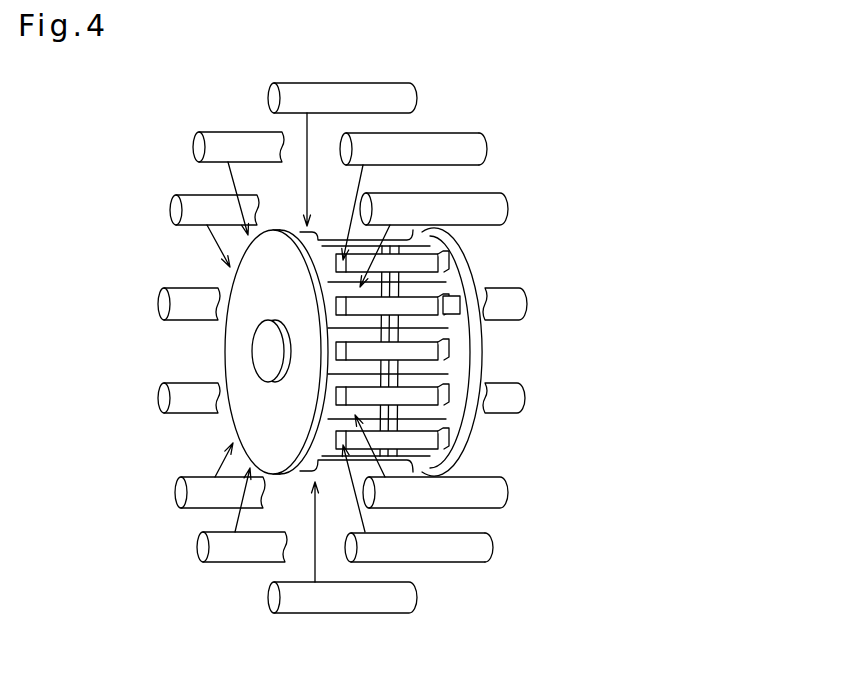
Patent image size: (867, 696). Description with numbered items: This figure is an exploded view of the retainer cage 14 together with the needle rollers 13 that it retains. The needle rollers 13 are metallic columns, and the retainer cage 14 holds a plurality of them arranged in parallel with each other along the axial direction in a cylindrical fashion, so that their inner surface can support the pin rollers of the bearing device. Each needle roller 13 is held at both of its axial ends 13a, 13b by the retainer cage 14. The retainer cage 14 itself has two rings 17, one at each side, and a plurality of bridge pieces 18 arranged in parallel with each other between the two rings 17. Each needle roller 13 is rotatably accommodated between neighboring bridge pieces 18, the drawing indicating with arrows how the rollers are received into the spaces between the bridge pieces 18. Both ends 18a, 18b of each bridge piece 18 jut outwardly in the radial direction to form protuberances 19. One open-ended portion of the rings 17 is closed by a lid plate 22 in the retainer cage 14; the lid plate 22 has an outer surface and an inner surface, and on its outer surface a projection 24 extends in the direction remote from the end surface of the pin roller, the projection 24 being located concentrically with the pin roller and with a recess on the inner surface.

The needle roller 13 is at (428, 137).
The needle roller end 13a is at (349, 138).
The needle roller end 13b is at (477, 140).
The retainer cage 14 is at (528, 230).
The ring 17 is at (309, 236).
The bridge piece 18 is at (422, 308).
The bridge piece end 18a is at (332, 333).
The bridge piece end 18b is at (465, 320).
The protuberance 19 is at (473, 290).
The lid plate 22 is at (224, 340).
The projection 24 is at (262, 365).